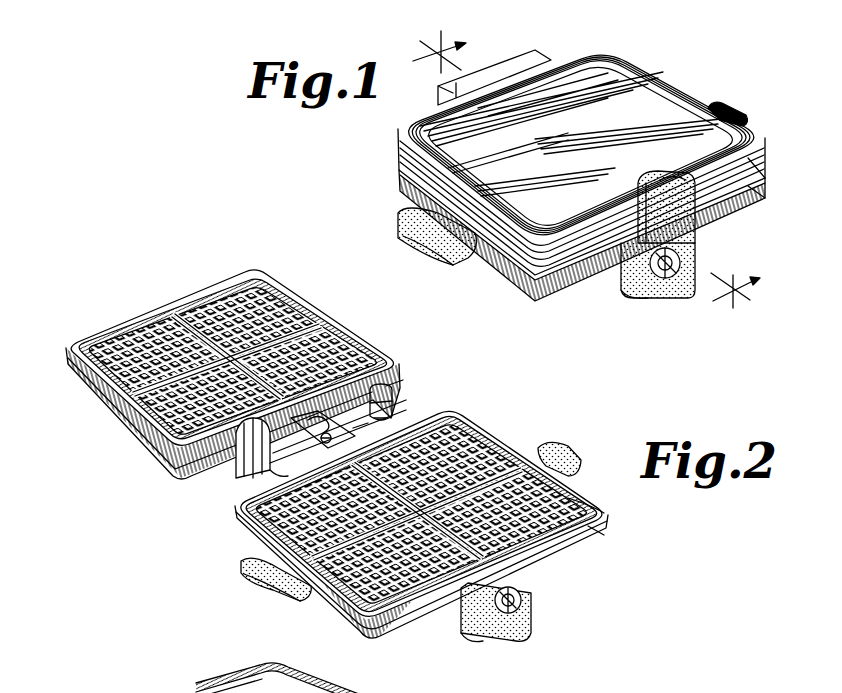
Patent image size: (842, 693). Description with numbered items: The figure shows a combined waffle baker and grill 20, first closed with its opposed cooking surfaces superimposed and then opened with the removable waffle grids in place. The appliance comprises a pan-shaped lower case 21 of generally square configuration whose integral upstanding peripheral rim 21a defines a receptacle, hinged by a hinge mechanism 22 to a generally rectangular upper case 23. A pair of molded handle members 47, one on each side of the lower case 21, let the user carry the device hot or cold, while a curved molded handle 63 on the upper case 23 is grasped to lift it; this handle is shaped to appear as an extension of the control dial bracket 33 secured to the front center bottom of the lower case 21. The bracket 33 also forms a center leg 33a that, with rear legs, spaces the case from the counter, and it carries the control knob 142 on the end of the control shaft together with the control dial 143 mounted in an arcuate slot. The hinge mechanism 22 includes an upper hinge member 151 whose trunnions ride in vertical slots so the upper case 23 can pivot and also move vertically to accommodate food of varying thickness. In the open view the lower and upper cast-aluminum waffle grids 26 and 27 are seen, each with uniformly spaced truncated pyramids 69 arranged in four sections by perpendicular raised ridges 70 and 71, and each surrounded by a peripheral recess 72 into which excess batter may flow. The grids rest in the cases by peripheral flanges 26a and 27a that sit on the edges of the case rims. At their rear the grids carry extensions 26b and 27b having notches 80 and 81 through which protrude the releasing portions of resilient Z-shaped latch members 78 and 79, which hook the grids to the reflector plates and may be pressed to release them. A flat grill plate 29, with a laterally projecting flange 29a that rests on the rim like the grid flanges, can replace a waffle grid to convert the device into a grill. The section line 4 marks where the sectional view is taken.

In FIG. 1, the section line 4- 4 is at (586, 177).
In FIG. 1, the combined waffle baker and grill 20 is at (609, 187).
In FIG. 2, the combined waffle baker and grill 20 is at (351, 474).
In FIG. 1, the lower case 21 is at (610, 282).
In FIG. 2, the lower case 21 is at (429, 524).
In FIG. 1, the peripheral wall portion or rim 21a is at (760, 185).
In FIG. 2, the peripheral wall portion or rim 21a is at (598, 530).
In FIG. 1, the hinge mechanism 22 is at (500, 48).
In FIG. 2, the hinge mechanism 22 is at (223, 470).
In FIG. 1, the upper case 23 is at (677, 78).
In FIG. 2, the upper case 23 is at (351, 405).
In FIG. 2, the lower waffle grid 26 is at (467, 441).
In FIG. 2, the peripheral flange 26a is at (596, 500).
In FIG. 2, the extension 26b is at (392, 392).
In FIG. 2, the upper waffle grid 27 is at (373, 343).
In FIG. 2, the peripheral flange 27a is at (295, 300).
In FIG. 2, the extension 27b is at (385, 378).
In FIG. 2, the grill plate 29 is at (298, 678).
In FIG. 2, the laterally projecting flange 29a is at (300, 672).
In FIG. 1, the control dial bracket 33 is at (699, 280).
In FIG. 2, the control dial bracket 33 is at (522, 630).
In FIG. 1, the center leg or support 33a is at (682, 285).
In FIG. 2, the center leg or support 33a is at (470, 632).
In FIG. 1, the handle member 47 is at (400, 207).
In FIG. 2, the handle member 47 is at (235, 572).
In FIG. 1, the handle 63 is at (662, 170).
In FIG. 2, the truncated pyramids 69 is at (290, 300).
In FIG. 2, the raised ridge 70 is at (328, 455).
In FIG. 2, the raised ridge 71 is at (160, 300).
In FIG. 2, the peripheral recess 72 is at (110, 398).
In FIG. 2, the latch member 78 is at (330, 422).
In FIG. 2, the latch member 79 is at (328, 394).
In FIG. 2, the notch 80 is at (312, 447).
In FIG. 2, the notch 81 is at (292, 412).
In FIG. 1, the control knob 142 is at (672, 256).
In FIG. 2, the control knob 142 is at (512, 600).
In FIG. 1, the control dial 143 is at (665, 248).
In FIG. 2, the control dial 143 is at (510, 590).
In FIG. 2, the upper hinge member 151 is at (260, 470).